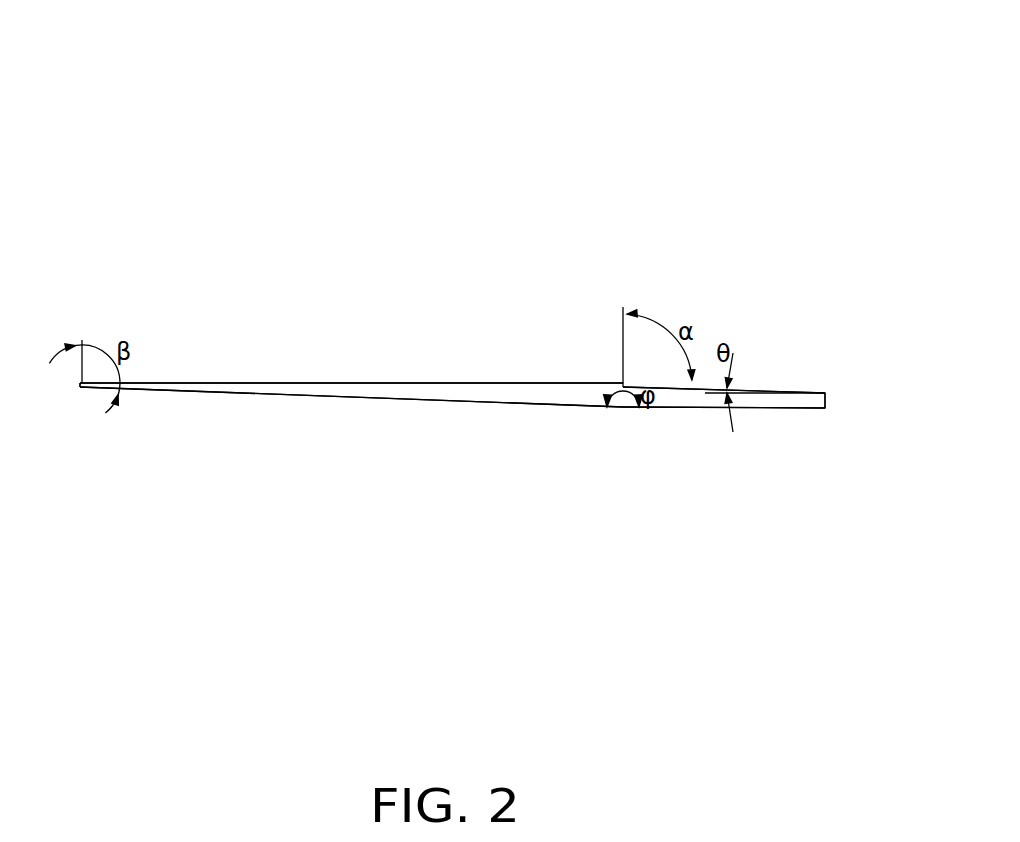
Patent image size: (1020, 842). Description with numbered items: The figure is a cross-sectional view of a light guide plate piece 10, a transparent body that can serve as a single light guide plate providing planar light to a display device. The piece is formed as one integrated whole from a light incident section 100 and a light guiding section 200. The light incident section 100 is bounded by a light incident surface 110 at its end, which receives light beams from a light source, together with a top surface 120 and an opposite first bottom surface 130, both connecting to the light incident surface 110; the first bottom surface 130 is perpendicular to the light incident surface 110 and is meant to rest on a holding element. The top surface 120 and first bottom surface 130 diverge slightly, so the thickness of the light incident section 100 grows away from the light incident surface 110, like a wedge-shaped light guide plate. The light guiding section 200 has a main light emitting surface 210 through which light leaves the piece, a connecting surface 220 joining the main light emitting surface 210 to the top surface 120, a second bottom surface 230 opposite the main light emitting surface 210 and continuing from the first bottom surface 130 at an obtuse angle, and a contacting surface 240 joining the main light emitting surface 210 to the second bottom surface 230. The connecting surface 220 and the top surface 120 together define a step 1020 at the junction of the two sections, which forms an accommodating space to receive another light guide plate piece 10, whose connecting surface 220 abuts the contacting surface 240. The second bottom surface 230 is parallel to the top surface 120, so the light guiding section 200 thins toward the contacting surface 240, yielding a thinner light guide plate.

The light guide plate piece 10 is at (400, 65).
The light incident section 100 is at (772, 418).
The light incident surface 110 is at (825, 400).
The top surface 120 is at (783, 392).
The first bottom surface 130 is at (699, 408).
The light guiding section 200 is at (282, 378).
The main light emitting surface 210 is at (432, 382).
The connecting surface 220 is at (620, 381).
The second bottom surface 230 is at (400, 398).
The contacting surface 240 is at (80, 386).
The step 1020 is at (630, 380).